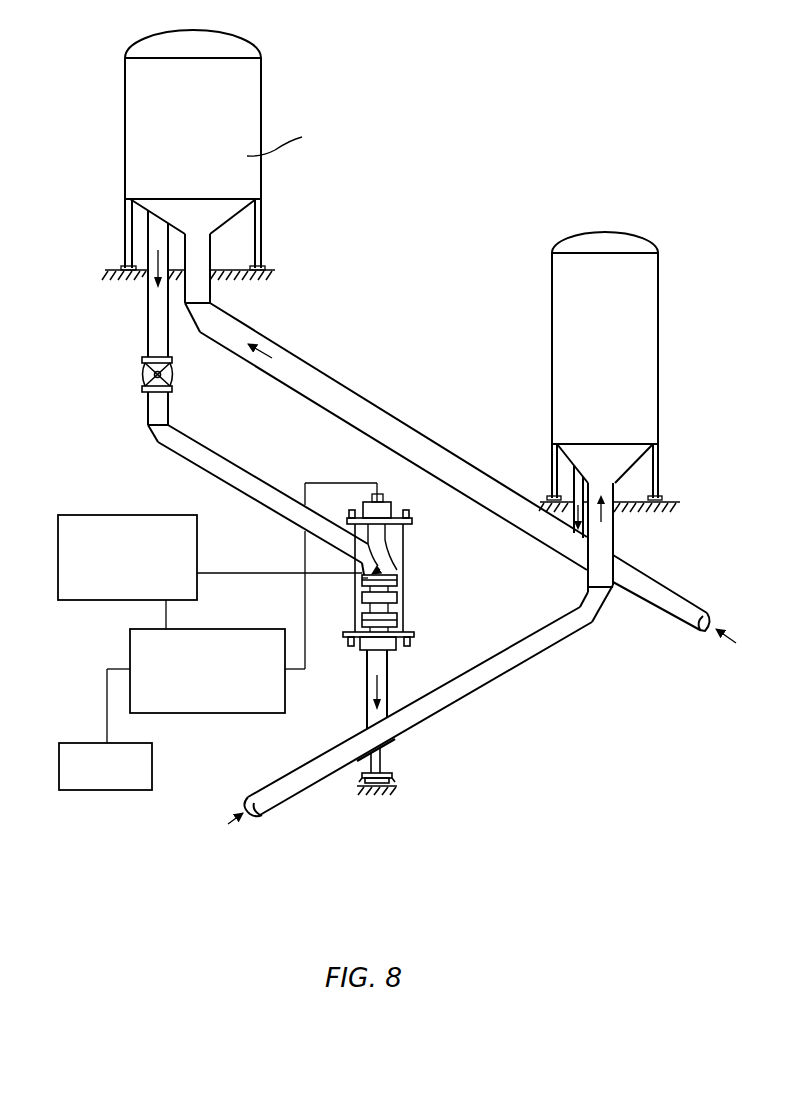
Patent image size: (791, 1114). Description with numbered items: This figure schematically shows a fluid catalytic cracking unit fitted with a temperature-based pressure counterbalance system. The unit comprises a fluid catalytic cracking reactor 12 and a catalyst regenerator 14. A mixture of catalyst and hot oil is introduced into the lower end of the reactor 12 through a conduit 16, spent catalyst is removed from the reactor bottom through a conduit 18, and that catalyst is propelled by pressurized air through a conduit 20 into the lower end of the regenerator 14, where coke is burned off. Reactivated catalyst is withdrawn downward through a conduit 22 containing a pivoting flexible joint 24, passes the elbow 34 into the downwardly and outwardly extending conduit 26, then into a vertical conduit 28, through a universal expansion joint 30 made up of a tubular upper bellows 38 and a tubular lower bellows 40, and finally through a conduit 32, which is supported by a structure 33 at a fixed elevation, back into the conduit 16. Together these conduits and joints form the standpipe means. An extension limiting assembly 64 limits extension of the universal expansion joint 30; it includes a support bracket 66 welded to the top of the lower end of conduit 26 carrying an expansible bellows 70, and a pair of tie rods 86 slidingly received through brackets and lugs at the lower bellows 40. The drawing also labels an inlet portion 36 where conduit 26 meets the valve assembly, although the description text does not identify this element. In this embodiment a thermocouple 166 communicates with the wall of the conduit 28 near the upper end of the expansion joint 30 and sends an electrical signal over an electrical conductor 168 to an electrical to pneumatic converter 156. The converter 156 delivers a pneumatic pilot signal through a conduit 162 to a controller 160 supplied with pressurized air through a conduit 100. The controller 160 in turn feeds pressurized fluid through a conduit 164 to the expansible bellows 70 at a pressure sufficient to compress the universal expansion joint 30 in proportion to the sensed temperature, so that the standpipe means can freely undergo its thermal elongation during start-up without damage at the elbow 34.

The fluid catalytic cracking reactor 12 is at (658, 374).
The catalyst regenerator 14 is at (261, 96).
The conduit 16 is at (483, 688).
The conduit 18 is at (573, 483).
The conduit 20 is at (380, 409).
The generally vertically downwardly extending conduit 22 is at (148, 301).
The pivoting flexible joint 24 is at (142, 365).
The conduit 26 is at (212, 451).
The generally vertically downwardly extending conduit 28 is at (398, 576).
The universal expansion joint 30 is at (394, 612).
The generally vertically downwardly extending conduit 32 is at (367, 665).
The structure 33 is at (389, 762).
The conduit elbow 34 is at (152, 434).
The inlet funnel 36 is at (400, 556).
The tubular upper bellows 38 is at (398, 599).
The tubular lower bellows 40 is at (398, 627).
The extension limiting assembly 64 is at (395, 505).
The support bracket 66 is at (396, 541).
The expansible bellows 70 is at (384, 502).
The tie rods 86 is at (398, 586).
The conduit 100 is at (107, 717).
The electrical to pneumatic converter 156 is at (119, 515).
The controller 160 is at (213, 629).
The conduit 162 is at (166, 610).
The conduit 164 is at (328, 483).
The thermocouple 166 is at (362, 580).
The electrical conductor 168 is at (266, 573).